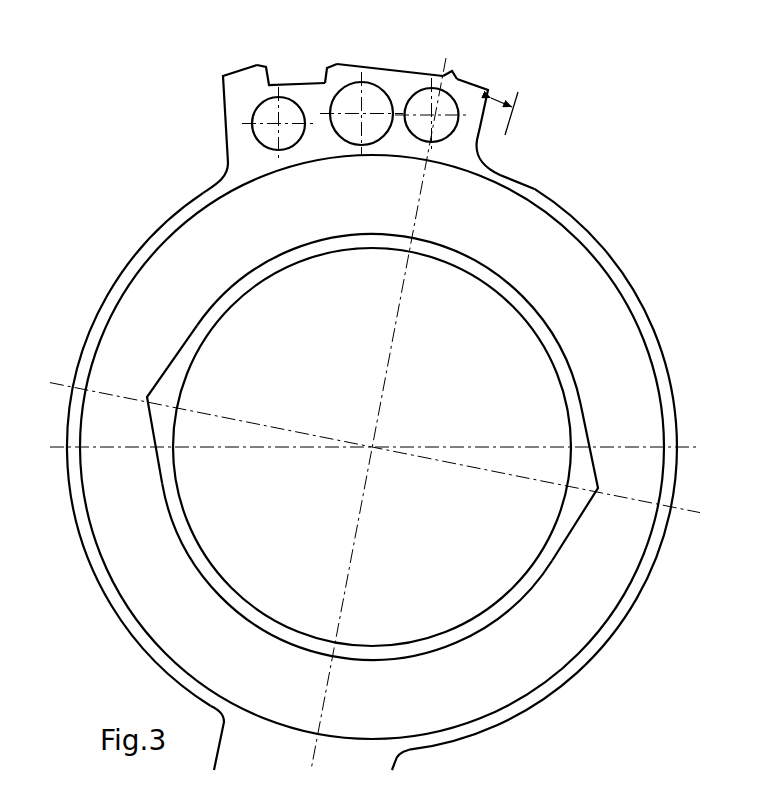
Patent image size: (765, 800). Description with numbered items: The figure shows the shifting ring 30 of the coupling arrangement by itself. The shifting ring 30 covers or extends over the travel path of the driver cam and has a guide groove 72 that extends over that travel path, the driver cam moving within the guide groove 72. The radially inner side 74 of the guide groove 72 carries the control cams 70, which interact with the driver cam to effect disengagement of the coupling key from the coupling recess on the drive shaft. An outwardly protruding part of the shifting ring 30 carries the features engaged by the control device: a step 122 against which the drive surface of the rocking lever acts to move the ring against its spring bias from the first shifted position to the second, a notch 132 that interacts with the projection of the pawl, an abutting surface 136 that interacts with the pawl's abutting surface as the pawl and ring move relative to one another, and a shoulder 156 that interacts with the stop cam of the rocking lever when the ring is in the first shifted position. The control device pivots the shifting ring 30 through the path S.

The shifting ring 30 is at (542, 189).
The control cams 70 is at (147, 395).
The guide groove 72 is at (540, 247).
The radially inner side 74 is at (535, 305).
The step 122 is at (483, 125).
The notch 132 is at (259, 65).
The abutting surface 136 is at (328, 70).
The shoulder 156 is at (452, 72).